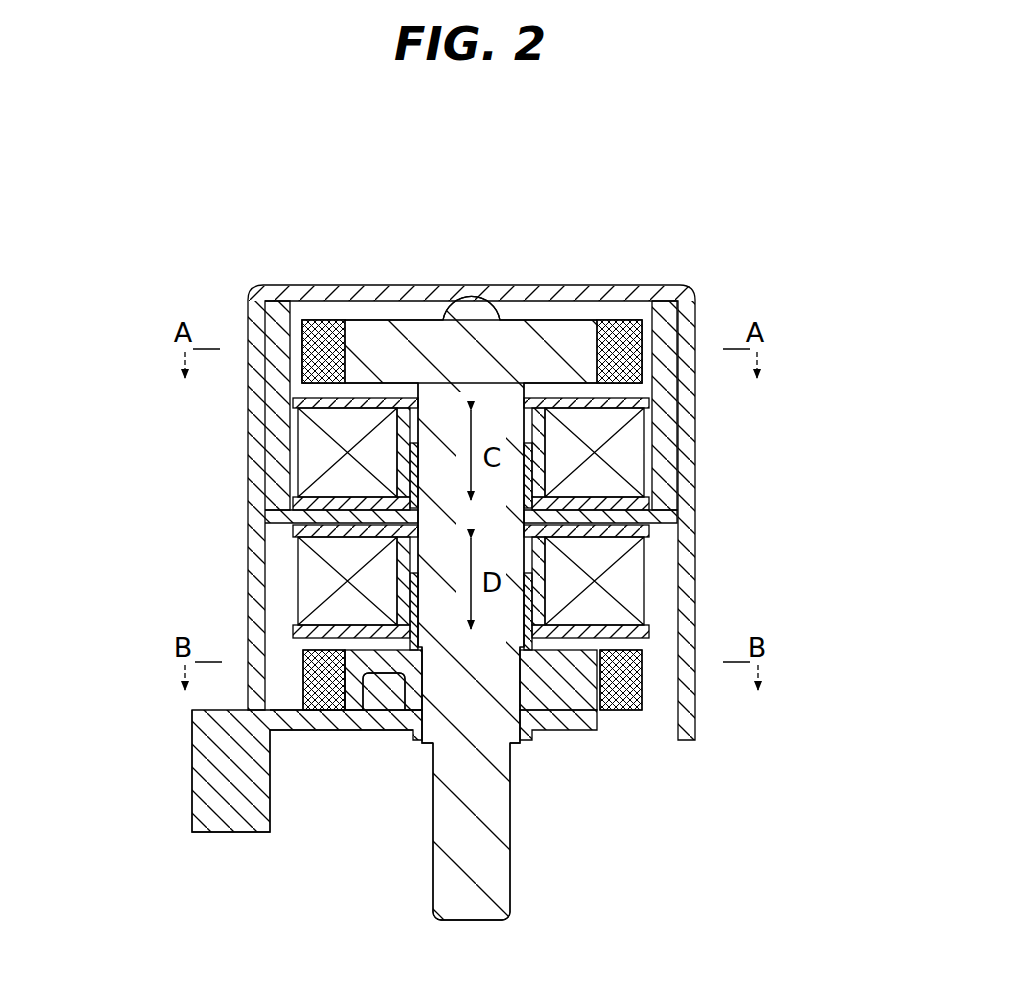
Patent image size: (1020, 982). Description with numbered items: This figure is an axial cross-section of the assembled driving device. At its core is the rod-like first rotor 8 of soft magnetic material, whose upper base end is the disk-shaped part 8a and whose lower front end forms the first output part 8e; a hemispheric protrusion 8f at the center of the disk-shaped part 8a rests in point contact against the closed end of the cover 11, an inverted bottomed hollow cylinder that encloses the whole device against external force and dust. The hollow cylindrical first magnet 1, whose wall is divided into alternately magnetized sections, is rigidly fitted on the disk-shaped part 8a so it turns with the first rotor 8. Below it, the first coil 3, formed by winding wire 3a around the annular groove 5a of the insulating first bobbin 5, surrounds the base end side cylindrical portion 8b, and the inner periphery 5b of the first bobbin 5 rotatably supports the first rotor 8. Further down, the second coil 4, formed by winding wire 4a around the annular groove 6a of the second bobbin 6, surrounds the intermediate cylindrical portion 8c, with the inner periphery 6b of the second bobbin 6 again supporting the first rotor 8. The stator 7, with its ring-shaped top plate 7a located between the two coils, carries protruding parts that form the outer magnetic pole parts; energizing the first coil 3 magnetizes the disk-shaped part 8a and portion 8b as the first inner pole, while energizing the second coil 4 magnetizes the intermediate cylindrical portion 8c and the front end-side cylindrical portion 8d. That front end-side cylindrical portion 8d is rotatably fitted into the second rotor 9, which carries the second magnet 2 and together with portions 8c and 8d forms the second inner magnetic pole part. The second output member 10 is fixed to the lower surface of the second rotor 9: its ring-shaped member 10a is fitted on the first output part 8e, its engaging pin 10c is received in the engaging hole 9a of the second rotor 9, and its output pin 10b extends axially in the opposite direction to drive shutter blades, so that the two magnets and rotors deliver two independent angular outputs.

The first magnet 1 is at (650, 286).
The cover 11 is at (417, 290).
The stator 7 is at (277, 468).
The top plate 7a is at (650, 518).
The first rotor 8 is at (538, 316).
The disk-shaped part 8a is at (376, 336).
The base end side cylindrical portion 8b is at (433, 432).
The intermediate cylindrical portion 8c is at (435, 580).
The front end-side cylindrical portion 8d is at (510, 763).
The first output part 8e is at (495, 890).
The hemispheric protrusion 8f is at (473, 300).
The first bobbin 5 is at (648, 402).
The annular groove 5a is at (397, 493).
The inner periphery 5b is at (300, 404).
The first coil 3 is at (660, 434).
The wire 3a is at (633, 452).
The second bobbin 6 is at (647, 628).
The annular groove 6a is at (400, 620).
The inner periphery 6b is at (400, 541).
The second coil 4 is at (660, 582).
The wire 4a is at (647, 540).
The second magnet 2 is at (620, 692).
The second rotor 9 is at (573, 680).
The engaging hole 9a is at (385, 680).
The second output member 10 is at (574, 722).
The ring-shaped member 10a is at (323, 722).
The output pin 10b is at (212, 792).
The engaging pin 10c is at (373, 693).